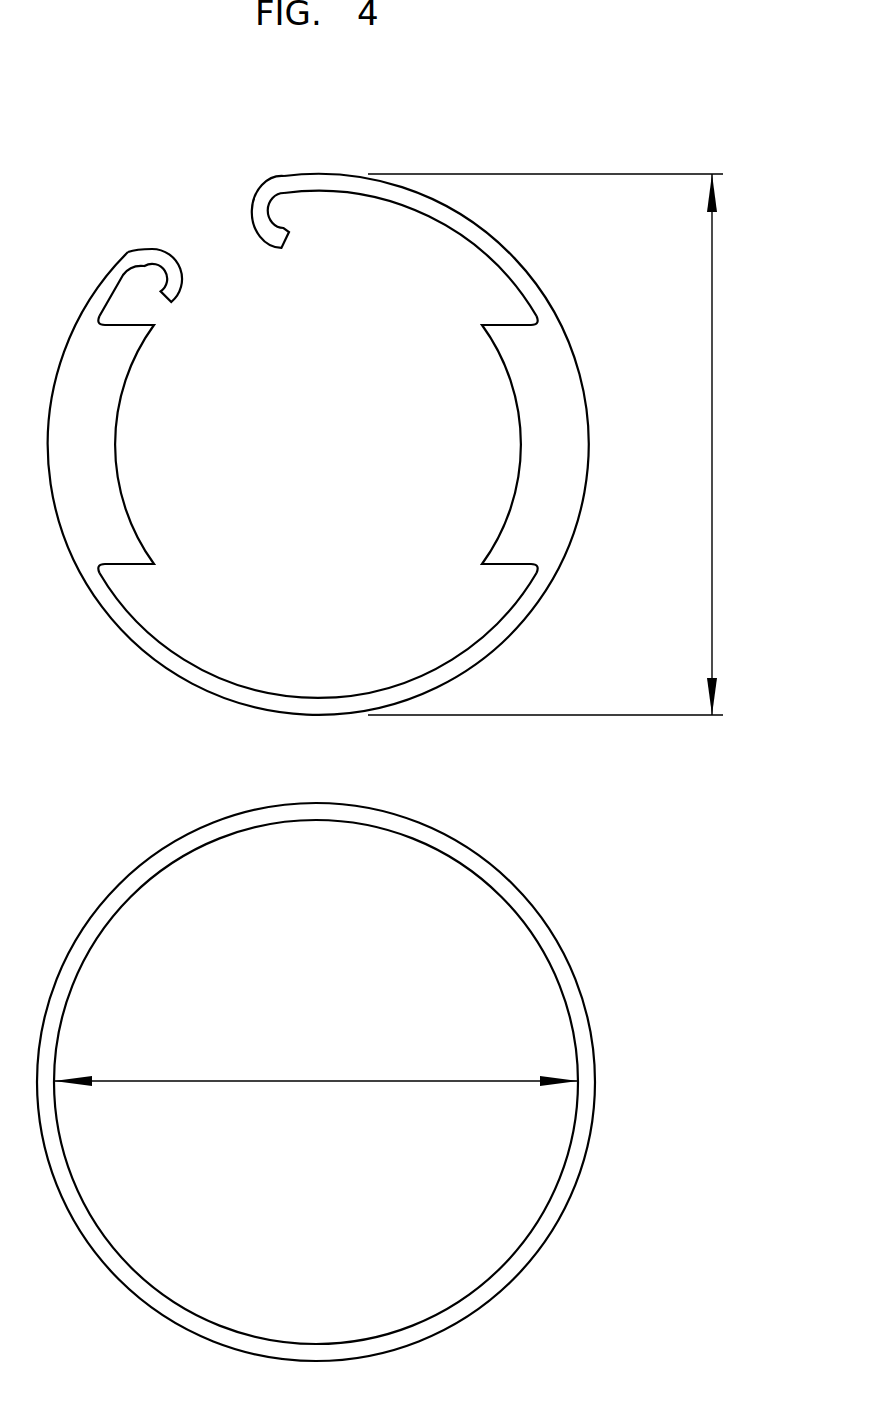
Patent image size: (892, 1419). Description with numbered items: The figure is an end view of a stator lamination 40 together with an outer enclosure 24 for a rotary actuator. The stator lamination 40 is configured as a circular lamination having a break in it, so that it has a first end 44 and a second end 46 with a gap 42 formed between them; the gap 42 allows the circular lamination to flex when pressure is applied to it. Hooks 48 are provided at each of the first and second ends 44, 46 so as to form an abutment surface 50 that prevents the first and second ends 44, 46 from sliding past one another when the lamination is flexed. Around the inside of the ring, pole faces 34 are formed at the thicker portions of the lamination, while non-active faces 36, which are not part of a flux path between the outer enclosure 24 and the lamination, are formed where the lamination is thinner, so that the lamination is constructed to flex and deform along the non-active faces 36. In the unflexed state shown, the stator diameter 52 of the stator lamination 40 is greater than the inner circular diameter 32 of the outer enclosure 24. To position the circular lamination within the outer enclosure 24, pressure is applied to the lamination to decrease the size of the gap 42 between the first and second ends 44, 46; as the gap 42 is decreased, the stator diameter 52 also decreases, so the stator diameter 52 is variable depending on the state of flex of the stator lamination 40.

The outer enclosure 24 is at (512, 880).
The inner circular diameter 32 is at (340, 1080).
The pole faces 34 is at (522, 443).
The non-active faces 36 is at (387, 200).
The stator lamination 40 is at (513, 257).
The gap 42 is at (186, 192).
The first end 44 is at (122, 255).
The second end 46 is at (283, 175).
The hooks 48 is at (276, 246).
The abutment surface 50 is at (174, 258).
The stator diameter 52 is at (712, 470).